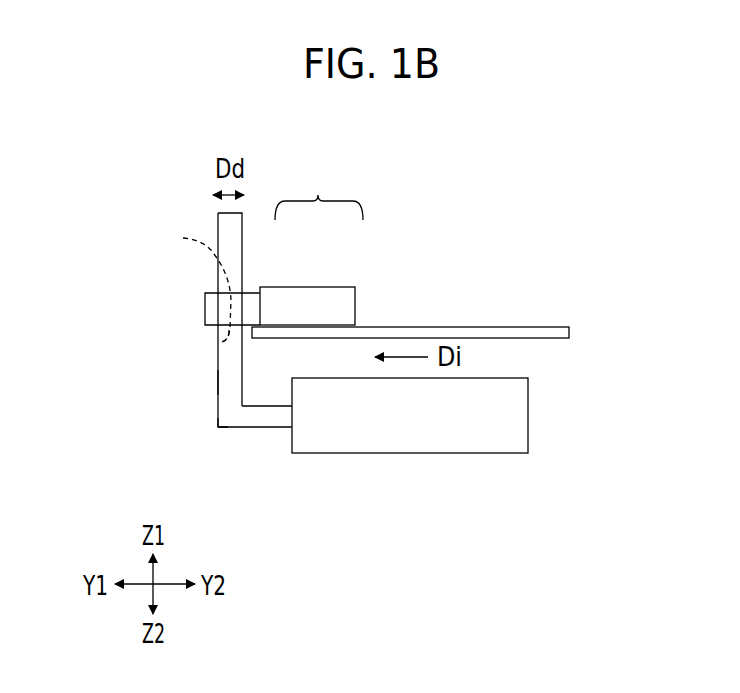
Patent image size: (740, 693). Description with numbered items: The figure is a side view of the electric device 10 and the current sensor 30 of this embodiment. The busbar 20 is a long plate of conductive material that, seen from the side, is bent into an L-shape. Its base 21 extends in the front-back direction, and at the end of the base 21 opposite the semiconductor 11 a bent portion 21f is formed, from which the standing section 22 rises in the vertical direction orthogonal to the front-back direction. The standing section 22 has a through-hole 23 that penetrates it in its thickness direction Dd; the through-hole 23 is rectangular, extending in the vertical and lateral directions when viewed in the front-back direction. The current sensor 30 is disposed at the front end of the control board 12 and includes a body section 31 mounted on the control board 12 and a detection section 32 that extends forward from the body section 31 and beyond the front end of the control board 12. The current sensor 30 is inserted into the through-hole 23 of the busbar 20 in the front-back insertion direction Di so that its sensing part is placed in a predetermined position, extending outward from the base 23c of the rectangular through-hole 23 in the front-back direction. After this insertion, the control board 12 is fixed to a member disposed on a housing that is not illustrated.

The electric device 10 is at (318, 196).
The semiconductor 11 is at (433, 442).
The control board 12 is at (503, 332).
The busbar 20 is at (232, 255).
The base 21 is at (265, 418).
The bent portion 21f is at (222, 427).
The standing section 22 is at (226, 382).
The through-hole 23 is at (191, 281).
The base of the through-hole 23c is at (222, 342).
The current sensor 30 is at (316, 285).
The body section 31 is at (347, 307).
The detection section 32 is at (213, 307).